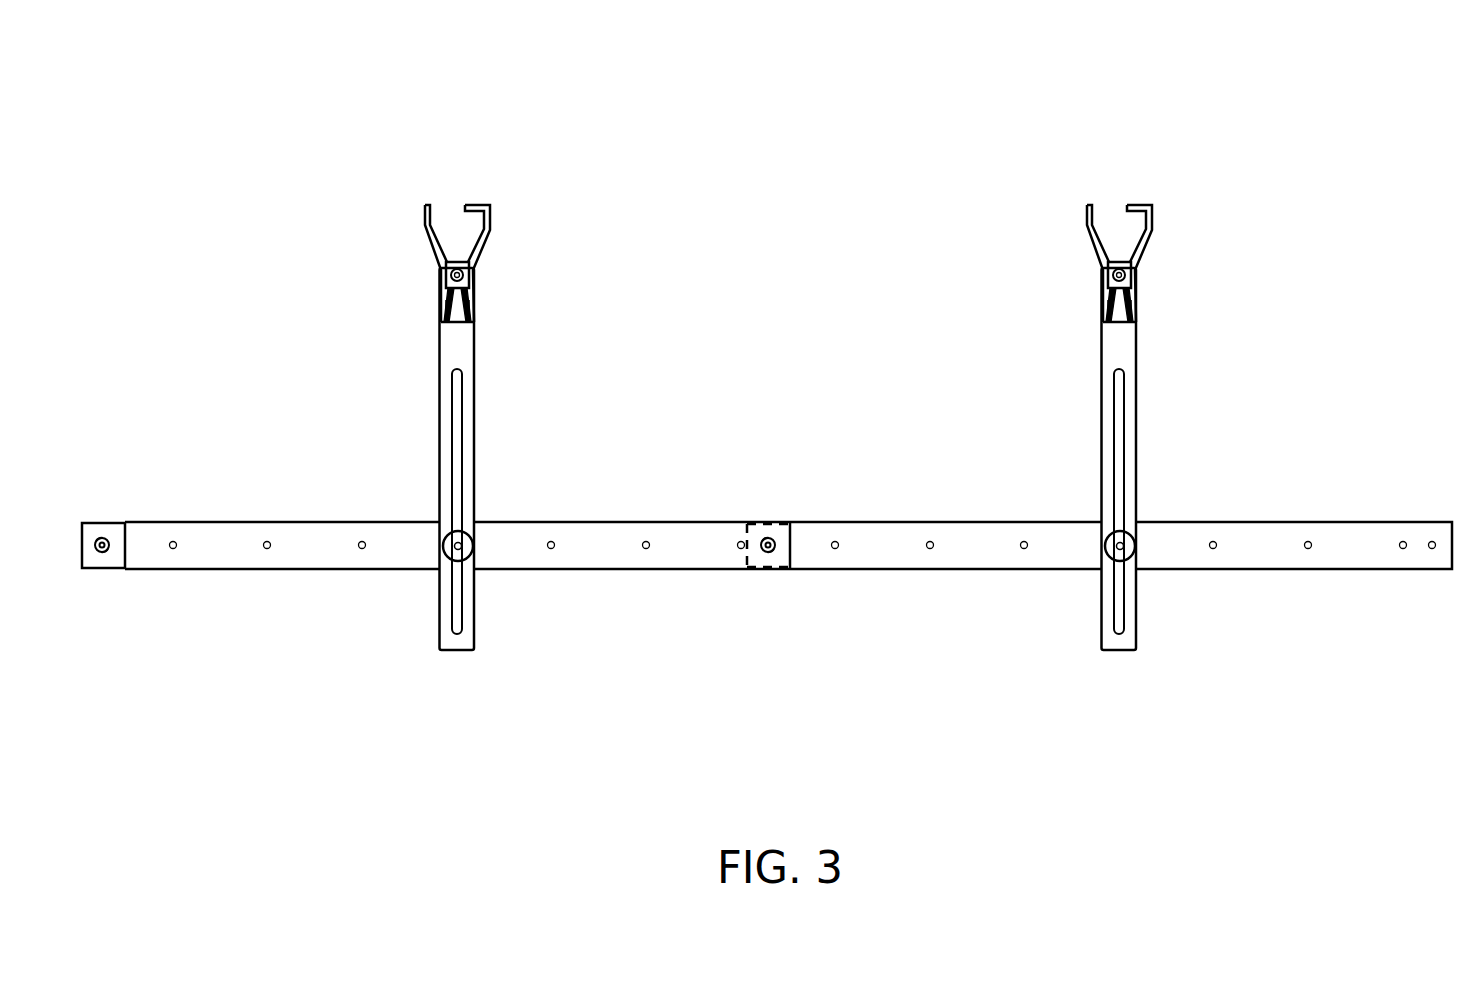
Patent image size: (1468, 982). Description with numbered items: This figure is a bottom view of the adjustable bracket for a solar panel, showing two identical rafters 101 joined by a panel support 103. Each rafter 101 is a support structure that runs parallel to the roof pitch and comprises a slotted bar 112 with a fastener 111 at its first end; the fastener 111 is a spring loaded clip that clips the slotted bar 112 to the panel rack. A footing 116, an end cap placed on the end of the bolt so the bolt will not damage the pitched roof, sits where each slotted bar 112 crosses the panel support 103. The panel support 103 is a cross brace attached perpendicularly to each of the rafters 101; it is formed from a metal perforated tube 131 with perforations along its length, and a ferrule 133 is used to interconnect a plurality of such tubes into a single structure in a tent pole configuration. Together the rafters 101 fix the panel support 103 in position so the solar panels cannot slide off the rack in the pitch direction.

The rafter 101 is at (432, 145).
The fastener 111 is at (488, 228).
The slotted bar 112 is at (463, 343).
The footing 116 is at (447, 538).
The panel support 103 is at (908, 522).
The metal perforated tube 131 is at (682, 537).
The ferrule 133 is at (758, 562).